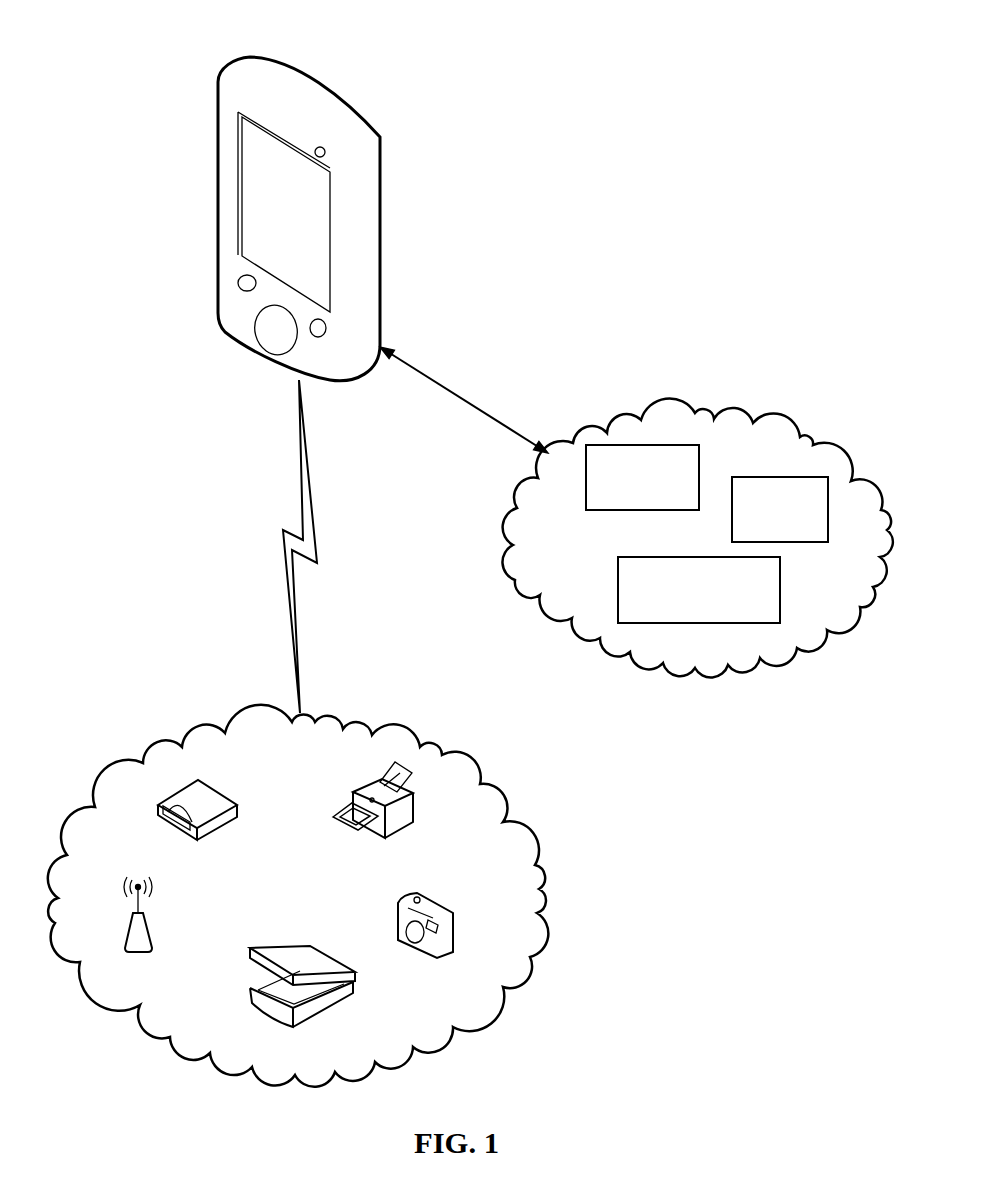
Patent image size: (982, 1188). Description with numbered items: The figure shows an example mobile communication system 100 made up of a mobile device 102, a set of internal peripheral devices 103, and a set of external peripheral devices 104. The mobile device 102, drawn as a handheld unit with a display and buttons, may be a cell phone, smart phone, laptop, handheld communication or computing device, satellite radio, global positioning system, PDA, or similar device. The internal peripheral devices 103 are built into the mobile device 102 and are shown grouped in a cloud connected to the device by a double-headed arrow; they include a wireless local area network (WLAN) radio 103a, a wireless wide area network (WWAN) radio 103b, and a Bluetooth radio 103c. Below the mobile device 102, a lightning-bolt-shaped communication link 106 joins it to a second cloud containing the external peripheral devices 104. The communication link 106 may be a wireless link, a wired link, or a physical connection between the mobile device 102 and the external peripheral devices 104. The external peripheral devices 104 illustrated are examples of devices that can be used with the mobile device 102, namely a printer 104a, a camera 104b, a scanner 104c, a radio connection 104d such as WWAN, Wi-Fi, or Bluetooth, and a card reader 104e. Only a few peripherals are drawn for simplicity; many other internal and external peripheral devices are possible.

The mobile communication system 100 is at (524, 39).
The mobile device 102 is at (382, 211).
The internal peripheral devices 103 is at (700, 412).
The wireless local area network (WLAN) radio 103a is at (699, 460).
The wireless wide area network (WWAN) radio 103b is at (790, 542).
The Bluetooth radio 103c is at (618, 566).
The external peripheral devices 104 is at (482, 760).
The printer 104a is at (410, 790).
The camera 104b is at (438, 902).
The scanner 104c is at (352, 980).
The radio connection 104d is at (147, 927).
The card reader 104e is at (217, 790).
The communication link 106 is at (308, 470).